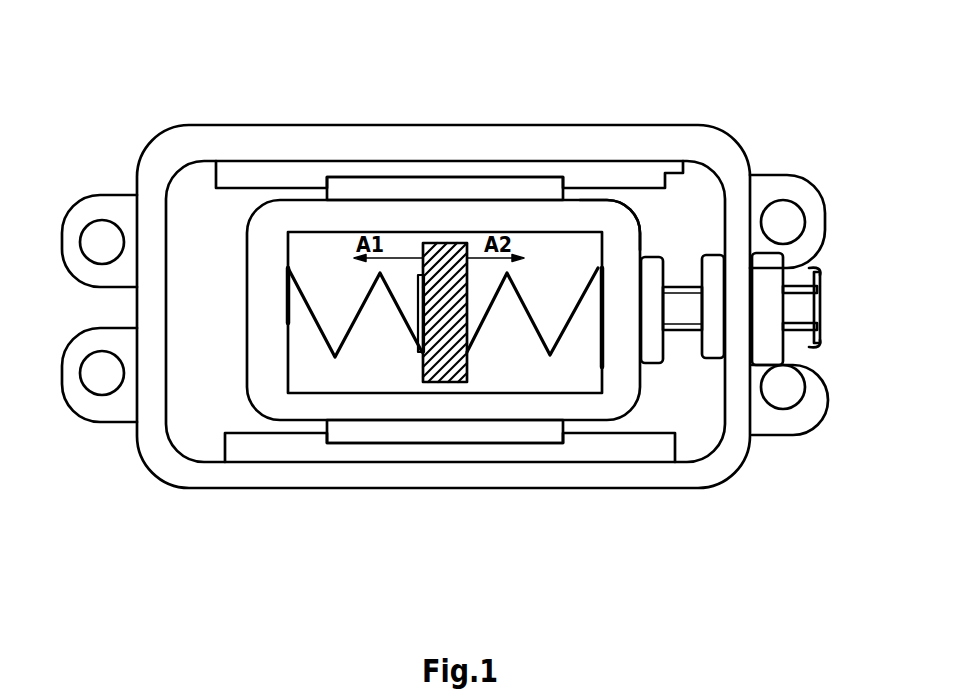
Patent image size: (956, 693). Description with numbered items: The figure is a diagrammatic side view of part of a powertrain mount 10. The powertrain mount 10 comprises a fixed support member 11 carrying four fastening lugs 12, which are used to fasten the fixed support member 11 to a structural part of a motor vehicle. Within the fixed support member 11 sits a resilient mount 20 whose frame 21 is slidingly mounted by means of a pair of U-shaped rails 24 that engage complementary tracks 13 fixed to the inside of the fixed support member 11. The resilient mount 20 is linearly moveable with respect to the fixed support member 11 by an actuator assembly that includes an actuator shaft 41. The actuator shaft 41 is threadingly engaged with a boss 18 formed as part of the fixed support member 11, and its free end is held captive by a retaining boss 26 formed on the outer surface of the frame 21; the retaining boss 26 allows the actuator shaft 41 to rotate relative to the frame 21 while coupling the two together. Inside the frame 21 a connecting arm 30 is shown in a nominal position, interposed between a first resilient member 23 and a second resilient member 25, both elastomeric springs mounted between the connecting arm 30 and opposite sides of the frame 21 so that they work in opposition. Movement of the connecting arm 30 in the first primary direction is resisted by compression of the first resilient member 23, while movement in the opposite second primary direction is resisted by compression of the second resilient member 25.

The powertrain mount 10 is at (222, 116).
The fixed support member 11 is at (423, 125).
The fastening lugs 12 is at (98, 194).
The tracks 13 is at (685, 173).
The boss 18 is at (744, 402).
The resilient mount 20 is at (253, 419).
The frame 21 is at (607, 203).
The first resilient member 23 is at (322, 333).
The U-shaped rails 24 is at (379, 177).
The second resilient member 25 is at (547, 355).
The retaining boss 26 is at (643, 434).
The connecting arm 30 is at (442, 382).
The actuator shaft 41 is at (683, 333).